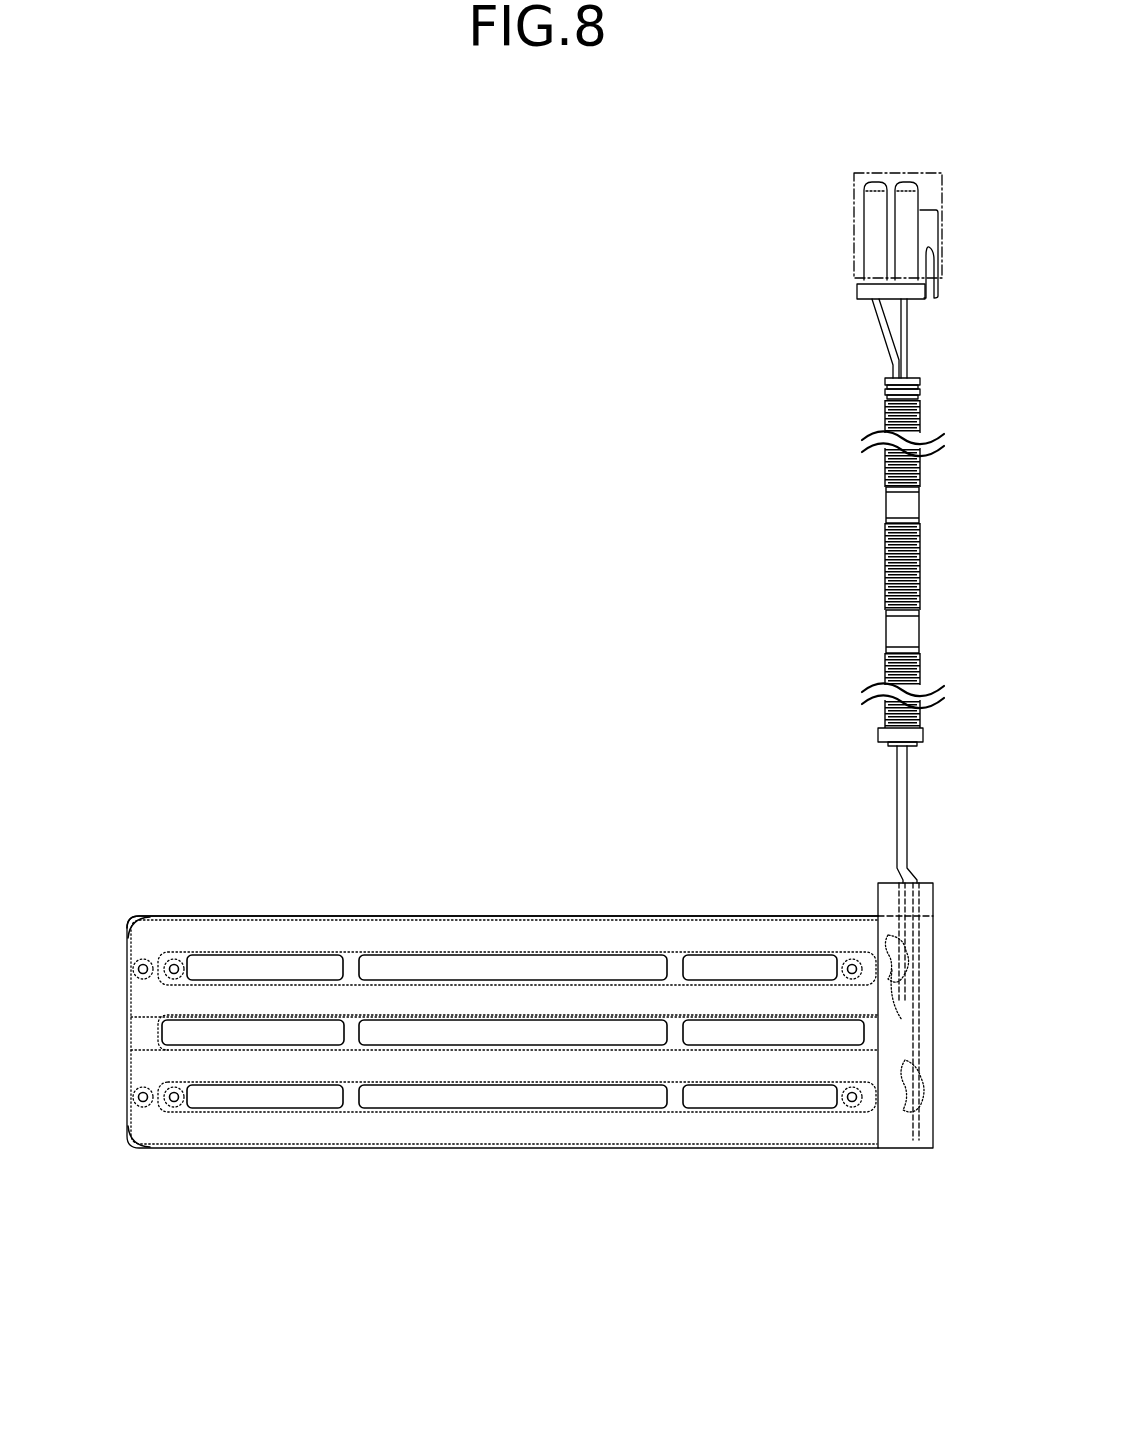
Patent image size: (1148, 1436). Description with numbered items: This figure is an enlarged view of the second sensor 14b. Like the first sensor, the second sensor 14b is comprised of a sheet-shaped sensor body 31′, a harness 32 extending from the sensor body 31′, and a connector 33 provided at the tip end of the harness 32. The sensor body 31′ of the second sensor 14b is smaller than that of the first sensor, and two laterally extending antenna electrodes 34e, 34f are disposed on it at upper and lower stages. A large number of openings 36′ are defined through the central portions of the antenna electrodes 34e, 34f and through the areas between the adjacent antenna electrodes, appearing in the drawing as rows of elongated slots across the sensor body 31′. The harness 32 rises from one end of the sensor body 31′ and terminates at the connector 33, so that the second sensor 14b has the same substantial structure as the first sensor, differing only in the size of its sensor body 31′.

The connector 33 is at (843, 245).
The harness 32 is at (878, 557).
The second sensor 14b is at (452, 866).
The sensor body 31′ is at (598, 904).
The openings 36′ is at (263, 965).
The antenna electrode 34f is at (153, 934).
The antenna electrode 34e is at (138, 1148).